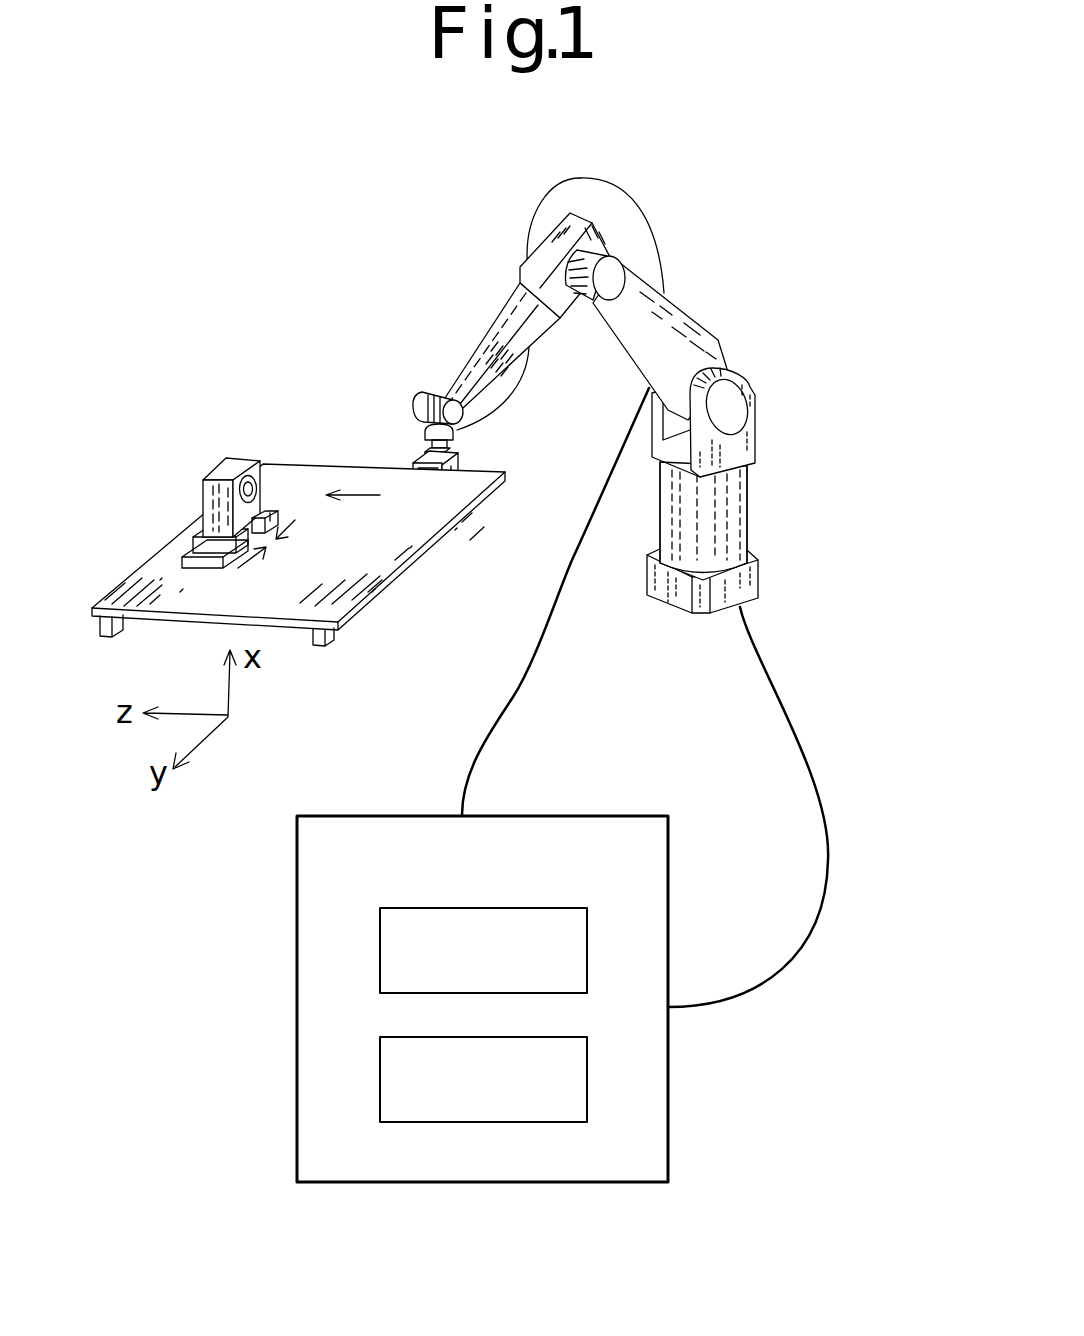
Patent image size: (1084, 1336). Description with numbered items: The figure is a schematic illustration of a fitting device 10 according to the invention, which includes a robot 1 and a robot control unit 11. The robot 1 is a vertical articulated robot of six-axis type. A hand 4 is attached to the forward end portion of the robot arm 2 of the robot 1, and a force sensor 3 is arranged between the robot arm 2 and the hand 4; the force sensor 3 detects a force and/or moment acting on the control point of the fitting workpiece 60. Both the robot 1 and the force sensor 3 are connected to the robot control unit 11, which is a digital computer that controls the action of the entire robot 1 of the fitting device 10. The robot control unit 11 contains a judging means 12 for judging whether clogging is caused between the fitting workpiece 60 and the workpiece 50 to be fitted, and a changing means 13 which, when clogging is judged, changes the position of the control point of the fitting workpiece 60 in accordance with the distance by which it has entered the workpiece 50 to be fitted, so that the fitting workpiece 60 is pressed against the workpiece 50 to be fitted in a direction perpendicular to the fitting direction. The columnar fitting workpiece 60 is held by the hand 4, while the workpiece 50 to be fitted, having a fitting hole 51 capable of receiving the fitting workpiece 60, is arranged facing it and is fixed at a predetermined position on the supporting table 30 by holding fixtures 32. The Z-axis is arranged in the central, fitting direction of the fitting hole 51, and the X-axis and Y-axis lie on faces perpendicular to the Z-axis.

The robot 1 is at (551, 399).
The robot arm 2 is at (420, 368).
The force sensor 3 is at (425, 437).
The hand 4 is at (408, 507).
The fitting device 10 is at (805, 330).
The robot control unit 11 is at (482, 1042).
The judging means 12 is at (588, 942).
The changing means 13 is at (588, 1070).
The supporting table 30 is at (282, 522).
The holding fixtures 32 is at (186, 552).
The workpiece to be fitted 50 is at (235, 419).
The fitting hole 51 is at (258, 484).
The fitting workpiece 60 is at (402, 506).